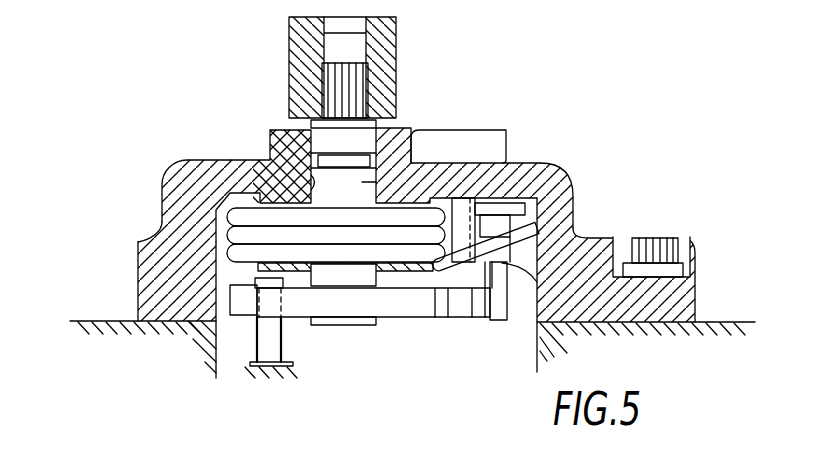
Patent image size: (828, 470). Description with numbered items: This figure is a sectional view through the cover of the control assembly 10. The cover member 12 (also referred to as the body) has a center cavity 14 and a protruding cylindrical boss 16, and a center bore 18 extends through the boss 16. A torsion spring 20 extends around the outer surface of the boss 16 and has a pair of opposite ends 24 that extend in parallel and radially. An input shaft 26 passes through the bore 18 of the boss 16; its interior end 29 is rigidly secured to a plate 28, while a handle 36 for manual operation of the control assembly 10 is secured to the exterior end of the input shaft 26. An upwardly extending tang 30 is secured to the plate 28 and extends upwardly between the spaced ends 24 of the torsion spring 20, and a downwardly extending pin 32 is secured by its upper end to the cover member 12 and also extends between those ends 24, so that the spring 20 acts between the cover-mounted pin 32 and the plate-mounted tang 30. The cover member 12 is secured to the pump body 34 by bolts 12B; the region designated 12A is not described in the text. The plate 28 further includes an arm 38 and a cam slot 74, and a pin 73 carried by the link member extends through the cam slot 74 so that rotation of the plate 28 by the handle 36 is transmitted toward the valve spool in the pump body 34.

The control assembly 10 is at (552, 126).
The cover member 12 is at (161, 205).
The housing base portion 12A is at (684, 300).
The bolts 12B is at (660, 237).
The center cavity 14 is at (138, 266).
The protruding cylindrical boss 16 is at (263, 158).
The center bore 18 is at (277, 142).
The torsion spring 20 is at (192, 166).
The opposite ends 24 is at (572, 208).
The input shaft 26 is at (411, 132).
The plate 28 is at (423, 312).
The interior end 29 is at (344, 322).
The tang 30 is at (570, 342).
The pin 32 is at (561, 178).
The pump body 34 is at (727, 323).
The handle 36 is at (397, 18).
The arm 38 is at (272, 318).
The pin 73 is at (285, 330).
The cam slot 74 is at (250, 290).